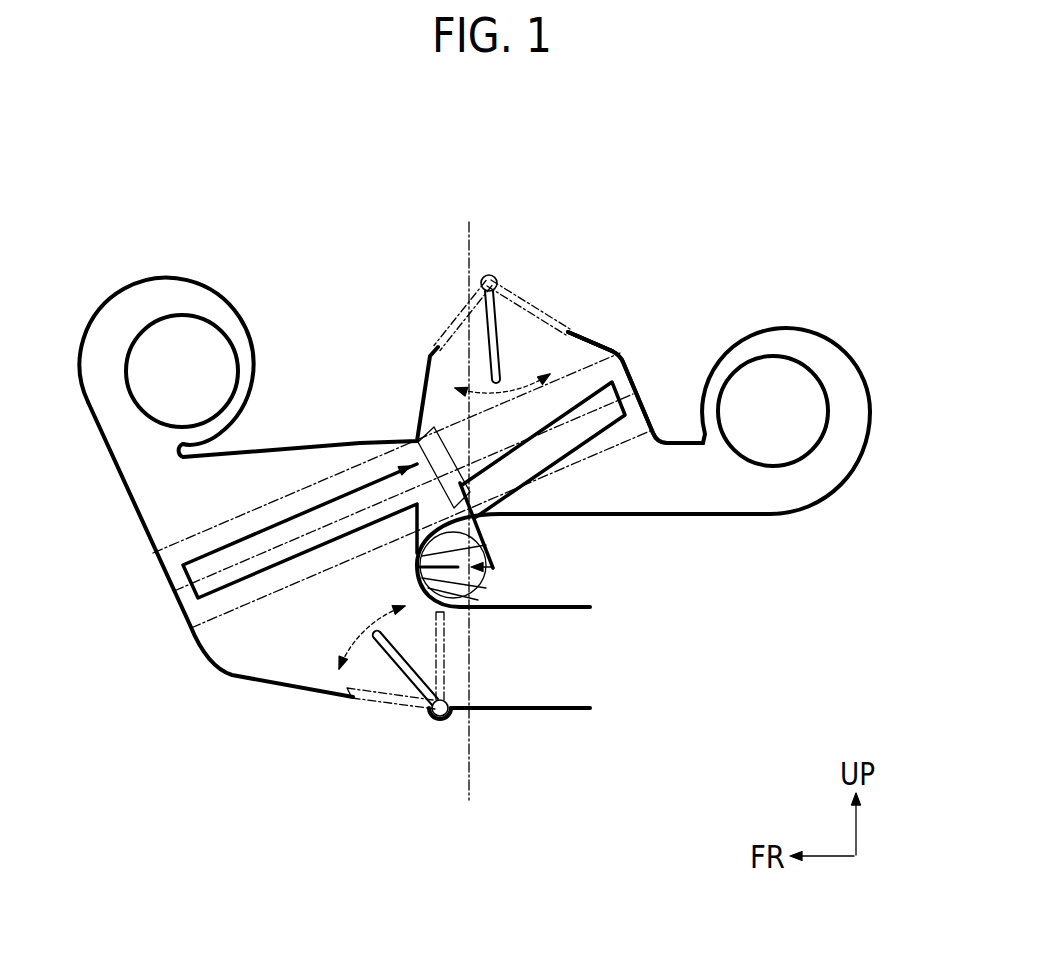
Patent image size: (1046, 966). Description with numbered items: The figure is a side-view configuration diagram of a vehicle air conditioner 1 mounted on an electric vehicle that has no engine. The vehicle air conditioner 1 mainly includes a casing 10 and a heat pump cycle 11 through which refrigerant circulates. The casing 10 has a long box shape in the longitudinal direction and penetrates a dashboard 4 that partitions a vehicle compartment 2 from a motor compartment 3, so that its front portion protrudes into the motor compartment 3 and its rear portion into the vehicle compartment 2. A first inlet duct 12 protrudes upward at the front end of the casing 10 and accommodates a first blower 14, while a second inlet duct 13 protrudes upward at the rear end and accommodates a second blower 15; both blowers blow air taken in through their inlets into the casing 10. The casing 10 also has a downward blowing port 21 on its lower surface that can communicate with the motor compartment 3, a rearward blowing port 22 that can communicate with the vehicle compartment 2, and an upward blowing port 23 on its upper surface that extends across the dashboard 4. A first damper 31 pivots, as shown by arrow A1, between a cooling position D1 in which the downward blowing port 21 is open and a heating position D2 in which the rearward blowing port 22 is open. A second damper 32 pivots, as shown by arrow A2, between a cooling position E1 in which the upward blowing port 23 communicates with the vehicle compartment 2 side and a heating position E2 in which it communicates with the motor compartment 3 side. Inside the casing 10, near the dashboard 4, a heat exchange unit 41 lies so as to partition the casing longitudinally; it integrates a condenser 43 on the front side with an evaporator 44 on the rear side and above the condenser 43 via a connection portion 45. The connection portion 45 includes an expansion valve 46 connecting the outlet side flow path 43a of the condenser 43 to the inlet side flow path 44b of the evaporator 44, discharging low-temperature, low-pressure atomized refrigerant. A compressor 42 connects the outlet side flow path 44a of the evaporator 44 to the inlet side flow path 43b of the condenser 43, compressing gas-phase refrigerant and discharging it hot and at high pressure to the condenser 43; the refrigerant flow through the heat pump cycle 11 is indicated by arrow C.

The vehicle air conditioner 1 is at (848, 208).
The vehicle compartment 2 is at (740, 213).
The motor compartment 3 is at (262, 205).
The dashboard 4 is at (471, 232).
The casing 10 is at (600, 337).
The heat pump cycle 11 is at (479, 557).
The first inlet duct 12 is at (152, 278).
The second inlet duct 13 is at (868, 373).
The first blower 14 is at (197, 316).
The second blower 15 is at (832, 420).
The downward blowing port 21 is at (361, 700).
The rearward blowing port 22 is at (548, 608).
The upward blowing port 23 is at (553, 318).
The first damper 31 is at (405, 670).
The second damper 32 is at (548, 437).
The heat exchange unit 41 is at (245, 630).
The compressor 42 is at (489, 578).
The condenser 43 is at (172, 541).
The outlet side flow path of the condenser 43a is at (230, 523).
The inlet side flow path of the condenser 43b is at (298, 584).
The evaporator 44 is at (618, 355).
The outlet side flow path of the evaporator 44a is at (558, 472).
The inlet side flow path of the evaporator 44b is at (582, 348).
The connection portion 45 is at (428, 430).
The expansion valve 46 is at (414, 438).
The arrow indicating pivotal movement of the first damper A1 is at (368, 632).
The arrow indicating pivotal movement of the second damper A2 is at (517, 465).
The arrow indicating flow of refrigerant C is at (605, 420).
The cooling position of the first damper D1 is at (448, 652).
The heating position of the first damper D2 is at (378, 707).
The cooling position of the second damper E1 is at (448, 323).
The heating position of the second damper E2 is at (529, 300).